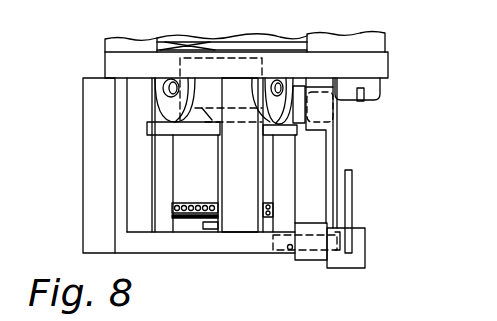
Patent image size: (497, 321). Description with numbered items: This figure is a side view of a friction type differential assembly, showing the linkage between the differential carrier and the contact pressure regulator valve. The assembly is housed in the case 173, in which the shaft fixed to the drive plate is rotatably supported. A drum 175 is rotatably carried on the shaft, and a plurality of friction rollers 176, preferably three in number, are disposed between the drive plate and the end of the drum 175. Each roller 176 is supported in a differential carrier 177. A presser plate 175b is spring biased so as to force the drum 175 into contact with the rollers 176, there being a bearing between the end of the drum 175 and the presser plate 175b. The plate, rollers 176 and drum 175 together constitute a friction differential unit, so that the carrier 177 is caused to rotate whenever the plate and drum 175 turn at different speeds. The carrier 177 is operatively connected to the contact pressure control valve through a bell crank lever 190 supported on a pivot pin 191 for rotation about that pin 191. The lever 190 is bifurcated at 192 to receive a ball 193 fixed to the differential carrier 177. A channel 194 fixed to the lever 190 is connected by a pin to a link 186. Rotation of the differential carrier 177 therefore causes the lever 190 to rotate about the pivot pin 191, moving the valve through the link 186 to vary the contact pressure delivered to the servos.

The case 173 is at (238, 150).
The drum 175 is at (195, 190).
The presser plate 175b is at (183, 218).
The friction rollers 176 is at (181, 52).
The differential carrier 177 is at (297, 90).
The link 186 is at (352, 202).
The bell crank lever 190 is at (337, 160).
The pivot pin 191 is at (289, 252).
The bifurcated portion 192 is at (330, 132).
The ball 193 is at (335, 118).
The channel 194 is at (358, 256).